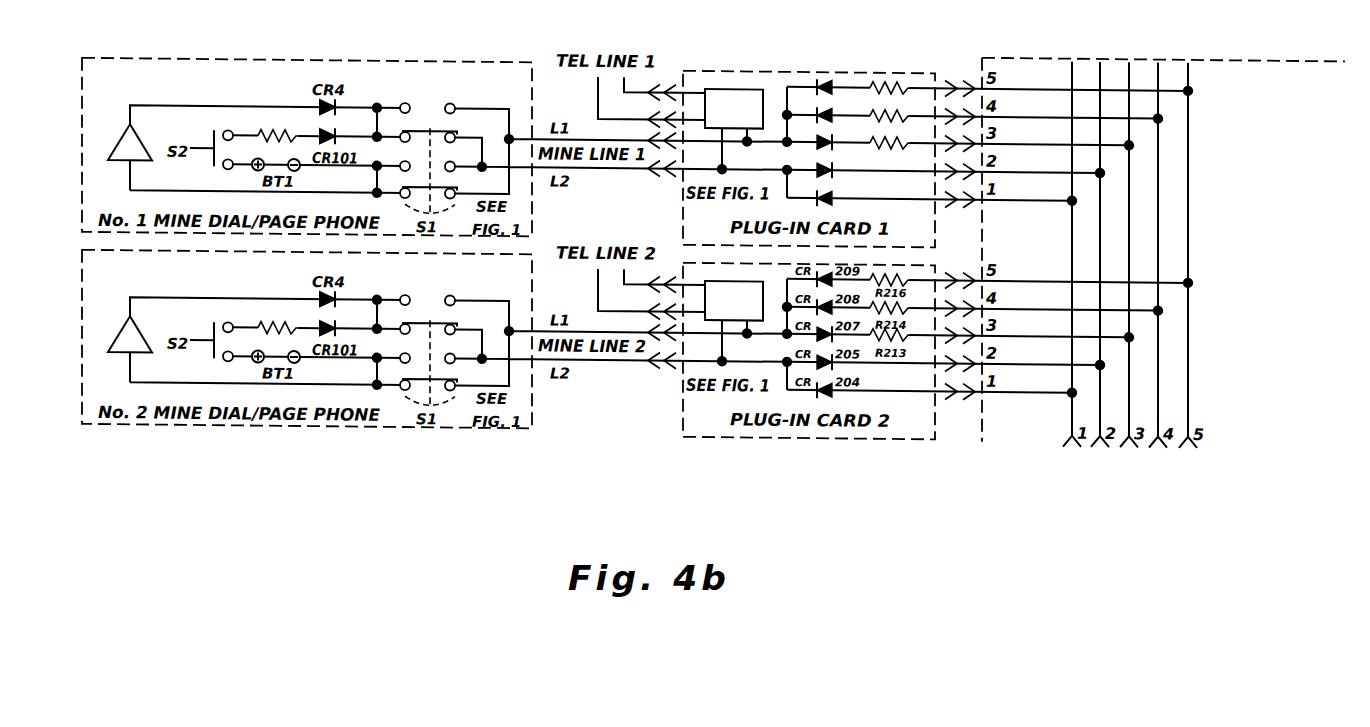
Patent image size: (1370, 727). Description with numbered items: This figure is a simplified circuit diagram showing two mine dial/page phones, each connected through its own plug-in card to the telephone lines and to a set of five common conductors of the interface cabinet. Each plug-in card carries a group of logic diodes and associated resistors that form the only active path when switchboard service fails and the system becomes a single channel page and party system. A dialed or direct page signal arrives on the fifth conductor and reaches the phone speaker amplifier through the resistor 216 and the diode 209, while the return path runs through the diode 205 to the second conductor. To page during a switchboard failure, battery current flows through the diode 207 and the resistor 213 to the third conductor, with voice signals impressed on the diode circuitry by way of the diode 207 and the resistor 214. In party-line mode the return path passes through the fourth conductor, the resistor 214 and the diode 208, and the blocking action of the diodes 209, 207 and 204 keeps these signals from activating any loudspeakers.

The diode CR209 209 is at (827, 84).
The diode CR208 208 is at (827, 112).
The diode CR207 207 is at (828, 139).
The diode CR205 205 is at (827, 167).
The diode CR204 204 is at (827, 195).
The resistor R216 216 is at (890, 95).
The resistor R214 214 is at (890, 125).
The resistor R213 213 is at (890, 152).